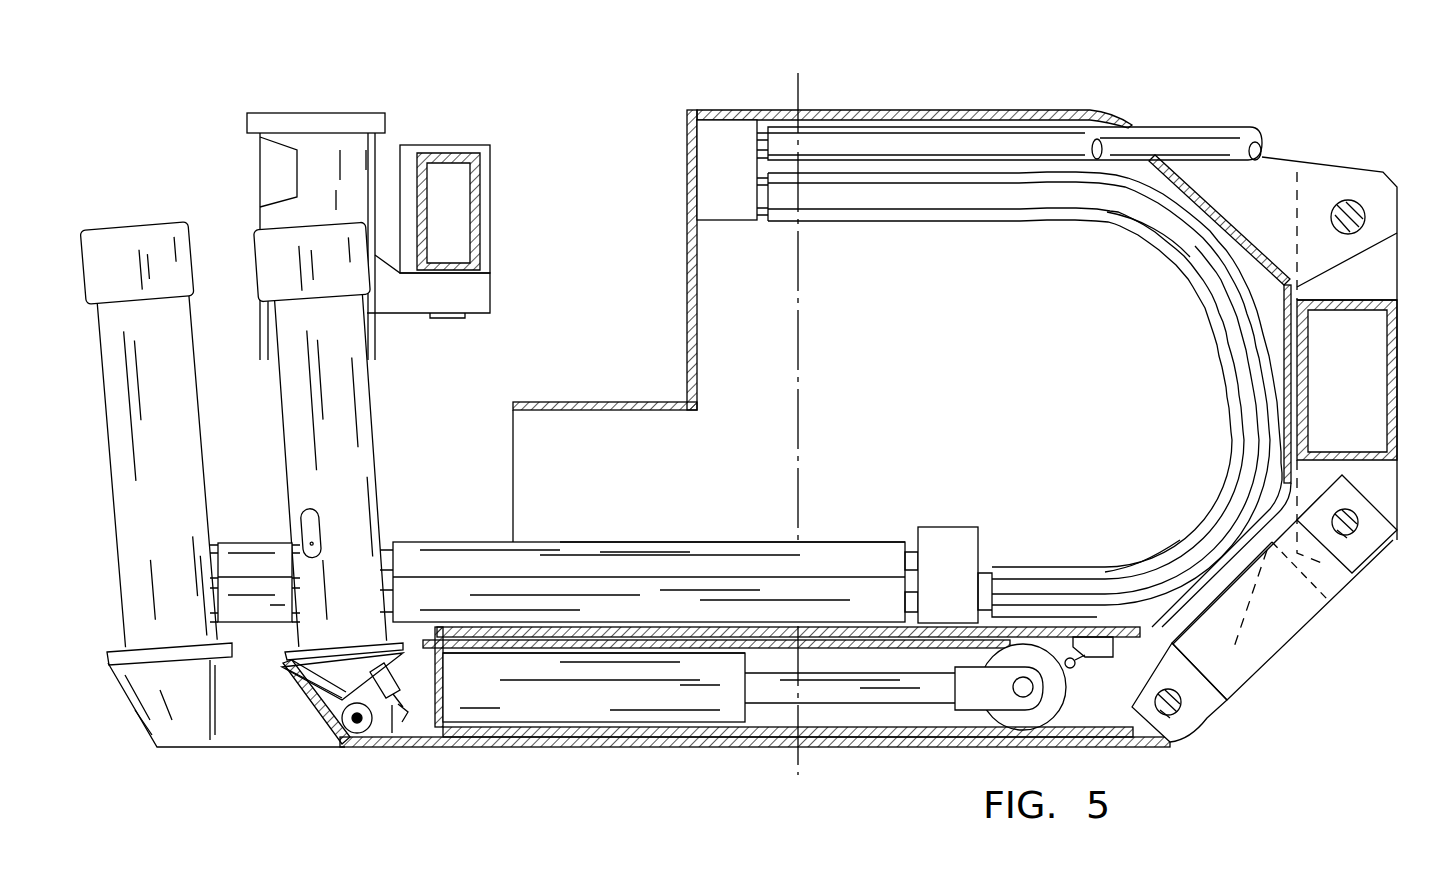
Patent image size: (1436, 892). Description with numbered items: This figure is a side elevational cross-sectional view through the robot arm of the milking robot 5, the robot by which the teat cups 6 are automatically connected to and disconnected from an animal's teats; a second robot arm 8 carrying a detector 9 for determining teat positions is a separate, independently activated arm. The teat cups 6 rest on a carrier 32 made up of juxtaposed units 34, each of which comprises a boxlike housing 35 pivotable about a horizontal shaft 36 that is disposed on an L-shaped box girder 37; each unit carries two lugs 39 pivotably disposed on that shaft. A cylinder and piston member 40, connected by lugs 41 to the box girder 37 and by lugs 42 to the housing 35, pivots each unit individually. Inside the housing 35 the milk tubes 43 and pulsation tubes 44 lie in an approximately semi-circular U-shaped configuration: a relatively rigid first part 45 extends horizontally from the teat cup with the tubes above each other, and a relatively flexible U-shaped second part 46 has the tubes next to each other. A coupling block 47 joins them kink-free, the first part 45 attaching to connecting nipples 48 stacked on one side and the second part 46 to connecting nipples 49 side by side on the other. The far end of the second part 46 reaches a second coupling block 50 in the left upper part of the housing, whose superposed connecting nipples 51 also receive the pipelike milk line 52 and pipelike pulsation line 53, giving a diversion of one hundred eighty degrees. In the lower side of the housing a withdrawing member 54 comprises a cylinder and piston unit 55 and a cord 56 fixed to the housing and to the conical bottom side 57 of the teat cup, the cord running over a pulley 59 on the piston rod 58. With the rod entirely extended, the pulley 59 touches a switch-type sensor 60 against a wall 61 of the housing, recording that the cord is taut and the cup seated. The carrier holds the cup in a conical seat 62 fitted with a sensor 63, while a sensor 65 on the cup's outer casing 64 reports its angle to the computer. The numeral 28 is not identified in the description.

The milking robot 5 is at (614, 318).
The teat cup 6 is at (150, 230).
The second robot arm 8 is at (482, 196).
The detector 9 is at (262, 160).
The frame 28 is at (1384, 172).
The carrier 32 is at (928, 114).
The unit 34 is at (960, 345).
The boxlike housing 35 is at (693, 358).
The horizontal shaft 36 is at (1330, 217).
The L-shaped box girder 37 is at (1350, 300).
The lug 39 is at (1282, 178).
The cylinder and piston member 40 is at (1280, 625).
The lug 41 is at (1385, 540).
The lug 42 is at (1198, 718).
The milk tube 43 is at (545, 580).
The pulsation tube 44 is at (482, 510).
The first part 45 is at (688, 540).
The second part 46 is at (1222, 353).
The coupling block 47 is at (960, 528).
The connecting nipple 48 is at (912, 548).
The connecting nipple 49 is at (985, 575).
The second coupling block 50 is at (705, 162).
The connecting nipple 51 is at (760, 208).
The pipelike milk line 52 is at (1240, 140).
The pipelike pulsation line 53 is at (1035, 135).
The withdrawing member 54 is at (668, 706).
The cylinder and piston unit 55 is at (535, 708).
The cord 56 is at (902, 735).
The conical bottom side 57 is at (328, 667).
The piston rod 58 is at (835, 695).
The pulley 59 is at (1052, 692).
The sensor 60 is at (1098, 640).
The wall 61 is at (895, 598).
The conical seat 62 is at (298, 690).
The sensor 63 is at (383, 732).
The outer casing 64 is at (311, 435).
The sensor 65 is at (290, 520).